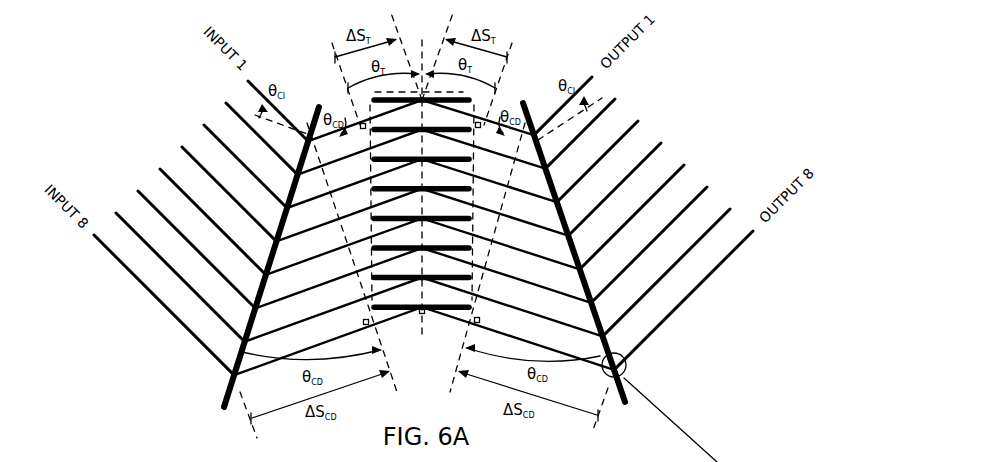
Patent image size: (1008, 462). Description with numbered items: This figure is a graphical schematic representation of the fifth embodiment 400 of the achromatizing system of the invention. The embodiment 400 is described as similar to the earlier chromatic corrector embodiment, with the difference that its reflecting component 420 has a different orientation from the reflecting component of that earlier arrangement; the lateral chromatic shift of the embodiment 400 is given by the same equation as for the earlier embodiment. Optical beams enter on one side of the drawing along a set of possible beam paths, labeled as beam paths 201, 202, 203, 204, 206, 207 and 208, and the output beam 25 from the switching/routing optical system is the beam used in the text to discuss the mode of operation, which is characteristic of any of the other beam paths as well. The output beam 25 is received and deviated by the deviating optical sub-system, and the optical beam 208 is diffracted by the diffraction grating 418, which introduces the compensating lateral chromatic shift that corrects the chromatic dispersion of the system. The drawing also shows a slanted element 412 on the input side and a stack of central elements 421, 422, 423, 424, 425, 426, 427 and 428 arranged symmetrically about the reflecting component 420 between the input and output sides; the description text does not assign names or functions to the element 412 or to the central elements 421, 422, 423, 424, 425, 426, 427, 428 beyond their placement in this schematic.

The fifth embodiment of the achromatizing system 400 is at (84, 50).
The input focal line 412 is at (227, 392).
The diffraction grating 418 is at (627, 382).
The reflecting component 420 is at (413, 318).
The first grating arm waveguide 421 is at (357, 115).
The second grating arm waveguide 422 is at (470, 102).
The third grating arm waveguide 423 is at (462, 158).
The fourth grating arm waveguide 424 is at (460, 187).
The fifth grating arm waveguide 425 is at (458, 218).
The sixth grating arm waveguide 426 is at (458, 248).
The seventh grating arm waveguide 427 is at (458, 277).
The eighth grating arm waveguide 428 is at (458, 306).
The beam path 201 is at (262, 78).
The beam path 202 is at (243, 115).
The beam path 203 is at (228, 135).
The beam path 204 is at (190, 183).
The beam path 206 is at (167, 213).
The beam path 207 is at (143, 230).
The optical beam 208 is at (122, 267).
The output beam 25 is at (209, 160).